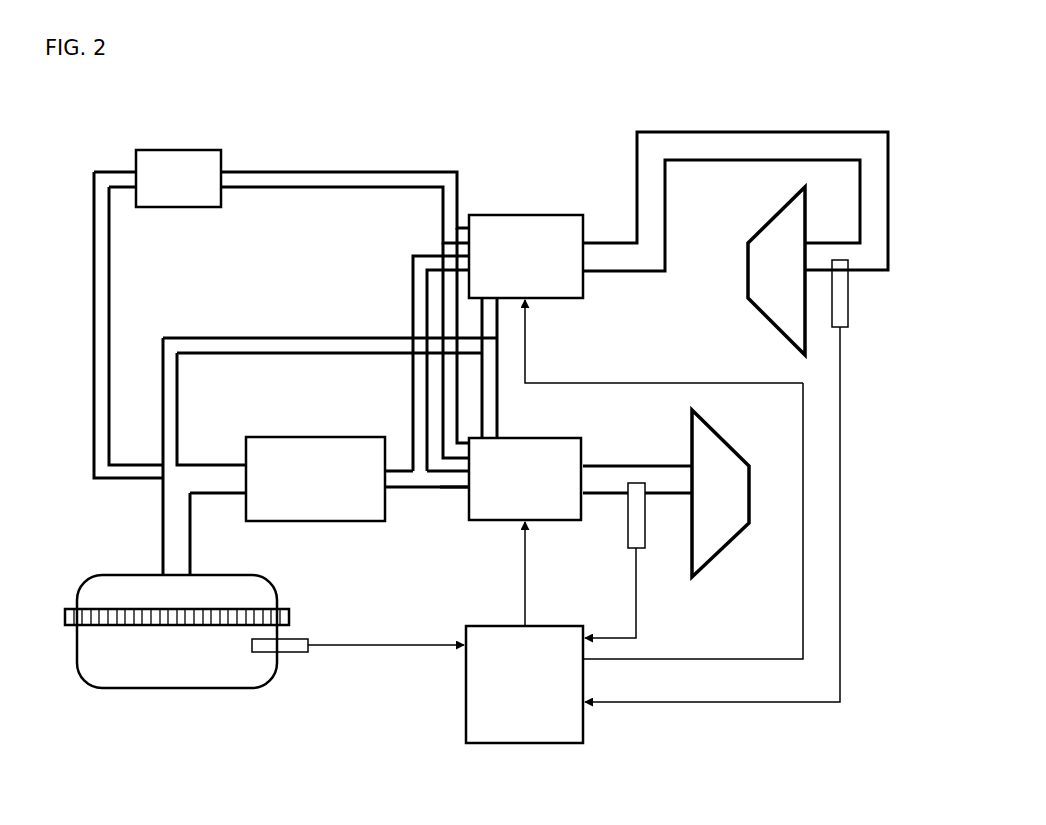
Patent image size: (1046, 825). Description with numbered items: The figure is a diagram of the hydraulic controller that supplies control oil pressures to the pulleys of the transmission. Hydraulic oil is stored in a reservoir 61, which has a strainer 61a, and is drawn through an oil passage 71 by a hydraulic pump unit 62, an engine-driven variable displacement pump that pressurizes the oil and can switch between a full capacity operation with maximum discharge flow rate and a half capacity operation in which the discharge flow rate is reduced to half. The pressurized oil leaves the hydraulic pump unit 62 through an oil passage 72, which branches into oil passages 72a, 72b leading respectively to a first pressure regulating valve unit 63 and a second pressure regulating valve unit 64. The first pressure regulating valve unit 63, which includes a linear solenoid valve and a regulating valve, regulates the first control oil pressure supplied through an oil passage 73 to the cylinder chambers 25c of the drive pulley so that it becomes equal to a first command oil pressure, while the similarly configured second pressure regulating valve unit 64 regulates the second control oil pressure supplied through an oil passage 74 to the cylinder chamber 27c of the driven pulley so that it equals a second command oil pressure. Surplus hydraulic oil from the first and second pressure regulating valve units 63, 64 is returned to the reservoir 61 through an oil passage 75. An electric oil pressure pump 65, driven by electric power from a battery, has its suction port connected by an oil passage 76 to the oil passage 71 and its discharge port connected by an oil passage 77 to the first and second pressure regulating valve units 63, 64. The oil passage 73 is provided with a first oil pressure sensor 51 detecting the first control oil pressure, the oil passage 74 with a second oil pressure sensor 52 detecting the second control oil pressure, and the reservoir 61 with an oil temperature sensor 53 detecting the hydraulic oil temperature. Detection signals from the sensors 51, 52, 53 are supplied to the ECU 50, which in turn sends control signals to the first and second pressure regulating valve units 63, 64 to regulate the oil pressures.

The ECU 50 is at (466, 697).
The first oil pressure sensor 51 is at (628, 537).
The second oil pressure sensor 52 is at (850, 312).
The oil temperature sensor 53 is at (290, 655).
The reservoir 61 is at (134, 575).
The strainer 61a is at (290, 617).
The hydraulic pump unit 62 is at (296, 437).
The first pressure regulating valve unit 63 is at (525, 438).
The second pressure regulating valve unit 64 is at (520, 215).
The electric oil pressure pump 65 is at (163, 150).
The oil passage 71 is at (212, 465).
The oil passage 72 is at (397, 487).
The oil passage 72a is at (460, 487).
The oil passage 72b is at (413, 262).
The oil passage 73 is at (620, 466).
The oil passage 74 is at (757, 132).
The oil passage 75 is at (262, 338).
The oil passage 76 is at (109, 272).
The oil passage 77 is at (290, 172).
The cylinder chambers 25c is at (730, 540).
The cylinder chamber 27c is at (748, 287).